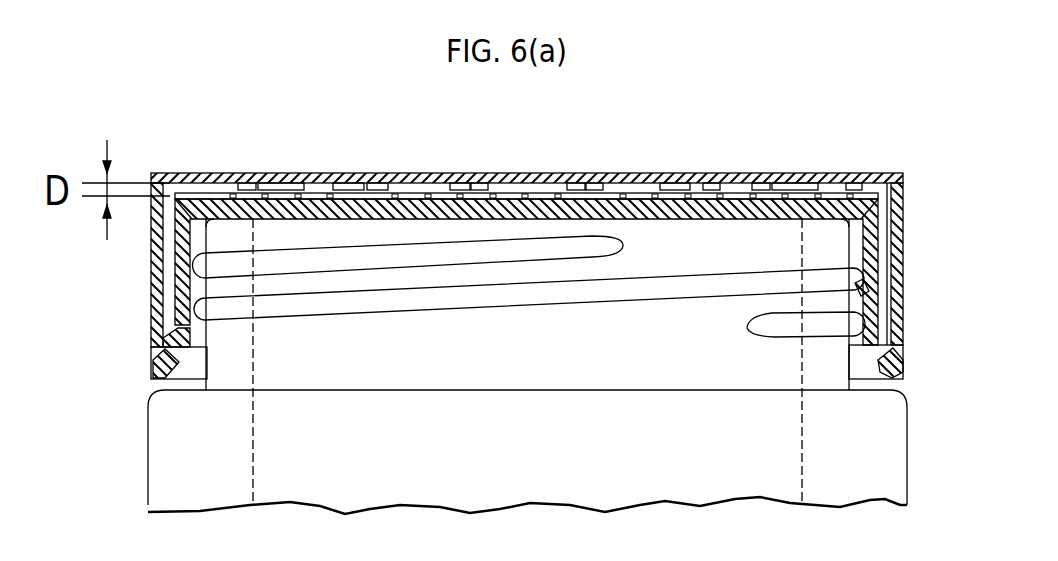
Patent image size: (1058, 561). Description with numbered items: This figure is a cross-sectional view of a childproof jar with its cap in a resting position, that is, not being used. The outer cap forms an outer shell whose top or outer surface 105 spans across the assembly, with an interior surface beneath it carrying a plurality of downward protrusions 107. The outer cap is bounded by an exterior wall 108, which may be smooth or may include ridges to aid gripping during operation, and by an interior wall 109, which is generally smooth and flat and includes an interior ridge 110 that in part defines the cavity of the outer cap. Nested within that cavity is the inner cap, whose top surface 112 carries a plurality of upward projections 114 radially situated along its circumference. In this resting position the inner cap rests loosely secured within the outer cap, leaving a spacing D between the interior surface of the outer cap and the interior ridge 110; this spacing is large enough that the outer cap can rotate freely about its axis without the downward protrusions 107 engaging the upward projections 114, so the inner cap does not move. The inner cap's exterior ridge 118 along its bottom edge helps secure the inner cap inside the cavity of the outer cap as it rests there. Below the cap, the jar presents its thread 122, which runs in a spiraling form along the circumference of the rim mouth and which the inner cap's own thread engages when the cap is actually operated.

The top or outer surface 105 is at (330, 173).
The protrusions 107 is at (590, 183).
The exterior wall 108 is at (900, 245).
The interior wall 109 is at (883, 302).
The interior ridge 110 is at (178, 365).
The top surface 112 is at (477, 198).
The upward projections 114 is at (423, 198).
The exterior ridge 118 is at (167, 342).
The thread 122 is at (508, 306).